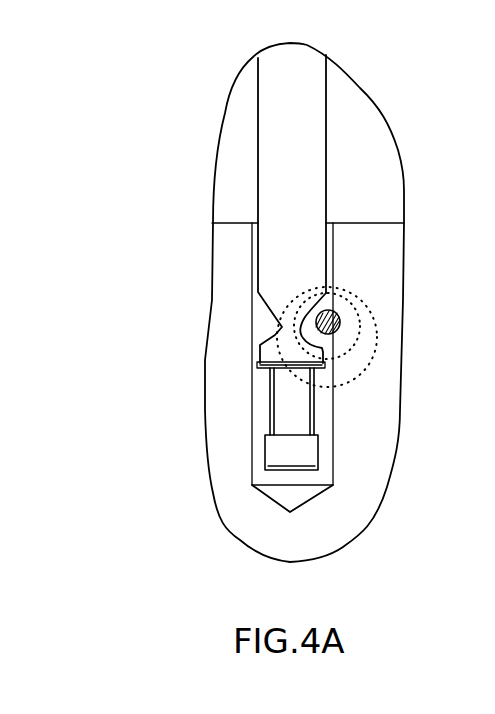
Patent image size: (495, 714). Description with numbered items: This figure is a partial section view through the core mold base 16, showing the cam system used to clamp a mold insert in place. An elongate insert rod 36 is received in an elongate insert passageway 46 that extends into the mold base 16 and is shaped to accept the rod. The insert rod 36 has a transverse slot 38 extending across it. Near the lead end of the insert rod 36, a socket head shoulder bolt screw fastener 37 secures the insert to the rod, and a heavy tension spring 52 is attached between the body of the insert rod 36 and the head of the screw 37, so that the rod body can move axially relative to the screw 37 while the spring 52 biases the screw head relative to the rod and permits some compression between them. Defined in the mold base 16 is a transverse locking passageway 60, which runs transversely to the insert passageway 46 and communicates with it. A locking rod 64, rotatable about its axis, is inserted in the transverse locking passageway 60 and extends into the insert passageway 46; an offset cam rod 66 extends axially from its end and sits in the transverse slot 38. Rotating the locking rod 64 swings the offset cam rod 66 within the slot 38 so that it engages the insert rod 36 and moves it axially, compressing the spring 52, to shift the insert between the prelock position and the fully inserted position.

The core mold base 16 is at (230, 427).
The insert rod 36 is at (303, 105).
The transverse slot 38 is at (335, 311).
The insert passageway 46 is at (318, 478).
The heavy tension spring 52 is at (312, 413).
The socket head shoulder bolt screw fastener 37 is at (297, 455).
The transverse locking passageway 60 is at (350, 363).
The locking rod 64 is at (347, 342).
The offset cam rod 66 is at (339, 316).